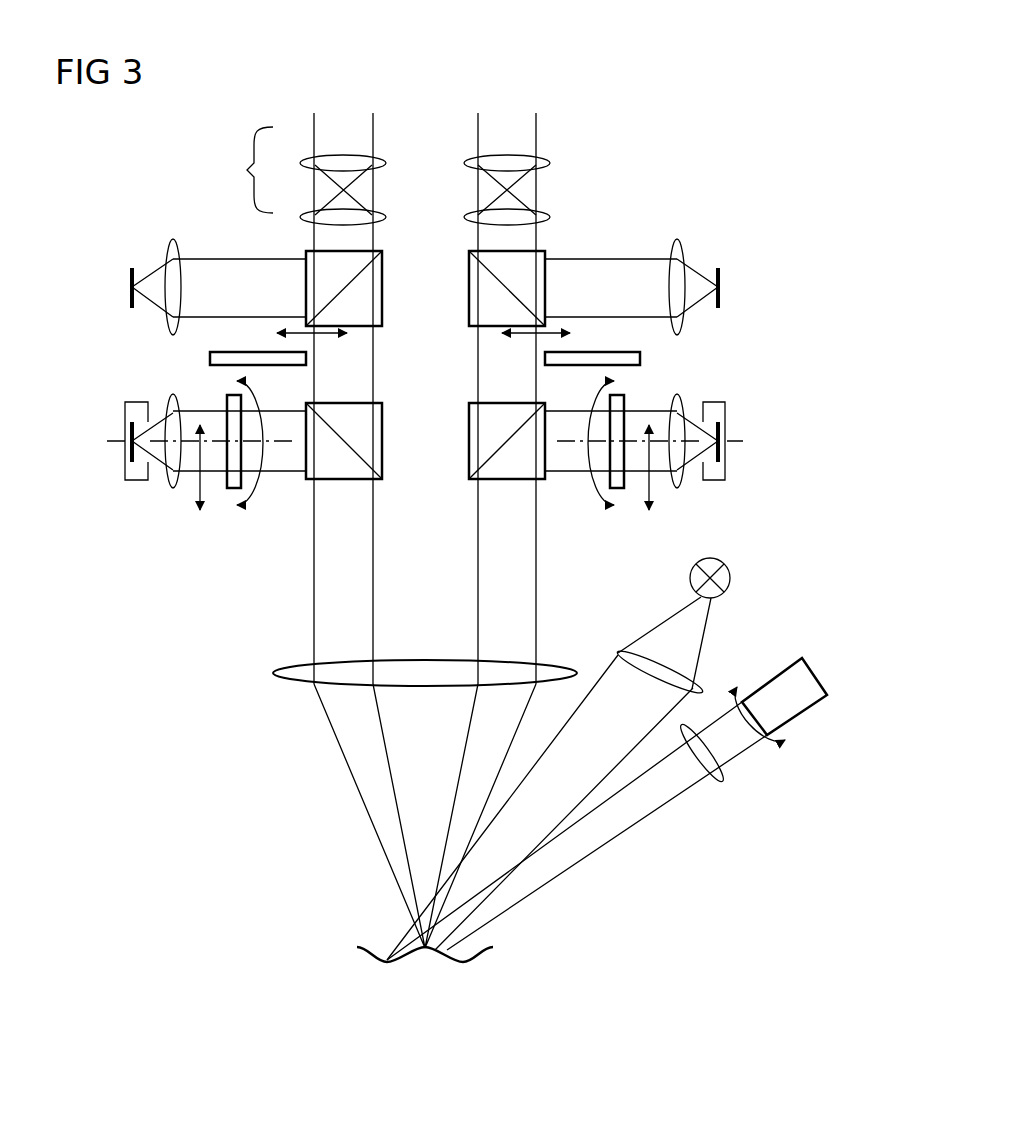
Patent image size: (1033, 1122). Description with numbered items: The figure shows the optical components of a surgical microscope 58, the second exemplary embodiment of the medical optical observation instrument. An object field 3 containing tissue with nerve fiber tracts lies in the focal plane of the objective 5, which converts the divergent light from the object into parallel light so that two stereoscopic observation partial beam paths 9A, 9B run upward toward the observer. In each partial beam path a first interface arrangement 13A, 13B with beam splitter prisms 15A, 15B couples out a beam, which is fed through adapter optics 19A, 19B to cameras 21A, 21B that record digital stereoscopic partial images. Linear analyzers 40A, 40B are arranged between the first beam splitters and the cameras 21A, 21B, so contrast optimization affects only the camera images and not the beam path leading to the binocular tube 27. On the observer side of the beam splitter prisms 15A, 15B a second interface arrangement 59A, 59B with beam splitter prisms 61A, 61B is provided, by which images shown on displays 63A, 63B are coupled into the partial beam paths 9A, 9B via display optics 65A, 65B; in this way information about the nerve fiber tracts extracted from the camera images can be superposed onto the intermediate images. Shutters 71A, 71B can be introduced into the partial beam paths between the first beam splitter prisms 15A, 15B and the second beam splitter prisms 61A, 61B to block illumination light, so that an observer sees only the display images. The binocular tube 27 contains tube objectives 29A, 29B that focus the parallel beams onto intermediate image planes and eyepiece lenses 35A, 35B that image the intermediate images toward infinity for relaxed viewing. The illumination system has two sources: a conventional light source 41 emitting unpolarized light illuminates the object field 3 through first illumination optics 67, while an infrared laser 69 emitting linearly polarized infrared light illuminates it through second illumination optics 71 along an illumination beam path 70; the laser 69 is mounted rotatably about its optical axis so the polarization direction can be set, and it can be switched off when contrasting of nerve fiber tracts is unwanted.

The object field 3 is at (461, 964).
The objective 5 is at (295, 684).
The observation partial beam path 9A is at (312, 613).
The observation partial beam path 9B is at (538, 613).
The first interface arrangement 13A is at (305, 490).
The first interface arrangement 13B is at (468, 491).
The beam splitter prism 15A is at (383, 473).
The beam splitter prism 15B is at (468, 443).
The adapter optics 19A is at (173, 490).
The adapter optics 19B is at (677, 490).
The camera 21A is at (124, 412).
The camera 21B is at (726, 412).
The binocular tube 27 is at (243, 170).
The tube objective 29A is at (387, 216).
The tube objective 29B is at (550, 216).
The eyepiece lens 35A is at (387, 162).
The eyepiece lens 35B is at (550, 162).
The linear analyzer 40A is at (232, 492).
The linear analyzer 40B is at (619, 492).
The conventional light source 41 is at (731, 579).
The surgical microscope 58 is at (662, 122).
The second interface arrangement 59A is at (377, 338).
The second interface arrangement 59B is at (476, 338).
The beam splitter prism 61A is at (384, 318).
The beam splitter prism 61B is at (467, 272).
The display 63A is at (129, 299).
The display 63B is at (721, 299).
The display optics 65A is at (173, 239).
The display optics 65B is at (677, 239).
The first illumination optics 67 is at (630, 650).
The infrared laser 69 is at (787, 672).
The illumination beam path 70 is at (640, 819).
The second illumination optics 71 is at (717, 785).
The shutter 71A is at (209, 359).
The shutter 71B is at (641, 359).